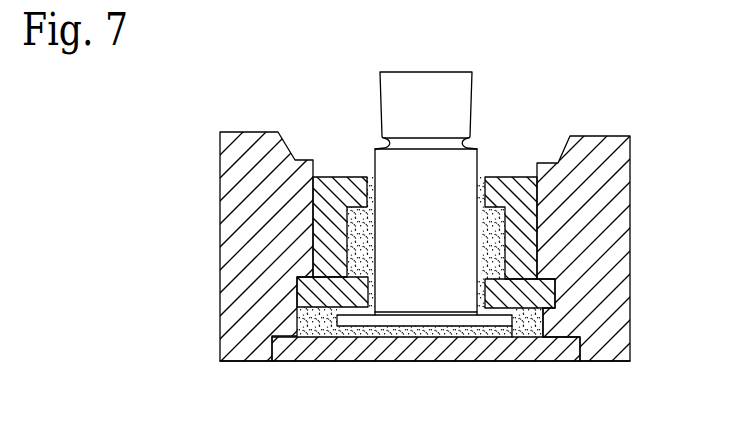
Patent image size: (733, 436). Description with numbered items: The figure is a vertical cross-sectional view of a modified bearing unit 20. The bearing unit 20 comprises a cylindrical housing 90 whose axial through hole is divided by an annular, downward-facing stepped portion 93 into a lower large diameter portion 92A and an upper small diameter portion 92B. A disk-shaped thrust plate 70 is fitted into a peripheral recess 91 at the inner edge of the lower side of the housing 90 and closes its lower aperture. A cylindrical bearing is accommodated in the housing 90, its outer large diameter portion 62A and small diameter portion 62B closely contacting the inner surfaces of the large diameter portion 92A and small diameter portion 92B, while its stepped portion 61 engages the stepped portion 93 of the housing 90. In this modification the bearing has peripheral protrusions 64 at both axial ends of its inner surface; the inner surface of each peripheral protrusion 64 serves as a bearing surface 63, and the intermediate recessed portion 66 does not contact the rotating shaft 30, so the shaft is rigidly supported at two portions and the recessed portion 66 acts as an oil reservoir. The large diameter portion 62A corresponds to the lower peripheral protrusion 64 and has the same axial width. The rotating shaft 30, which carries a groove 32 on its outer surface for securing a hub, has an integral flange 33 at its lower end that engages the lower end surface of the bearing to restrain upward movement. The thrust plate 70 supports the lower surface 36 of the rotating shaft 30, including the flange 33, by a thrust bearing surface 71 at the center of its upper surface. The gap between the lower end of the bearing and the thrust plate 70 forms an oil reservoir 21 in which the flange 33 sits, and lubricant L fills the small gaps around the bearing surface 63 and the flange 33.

The bearing unit 20 is at (206, 196).
The oil reservoir 21 is at (548, 328).
The rotating shaft 30 is at (455, 69).
The groove 32 is at (468, 142).
The flange 33 is at (357, 327).
The lower surface 36 is at (412, 328).
The stepped portion 61 is at (423, 264).
The large diameter portion 62A is at (547, 283).
The small diameter portion 62B is at (543, 215).
The bearing surface 63 is at (375, 190).
The peripheral protrusion 64 is at (353, 210).
The recessed portion 66 is at (500, 233).
The thrust plate 70 is at (437, 362).
The thrust bearing surface 71 is at (445, 335).
The housing 90 is at (632, 175).
The peripheral recess 91 is at (282, 338).
The large diameter portion 92A is at (307, 307).
The small diameter portion 92B is at (324, 177).
The stepped portion 93 is at (541, 338).
The lubricant L is at (517, 330).